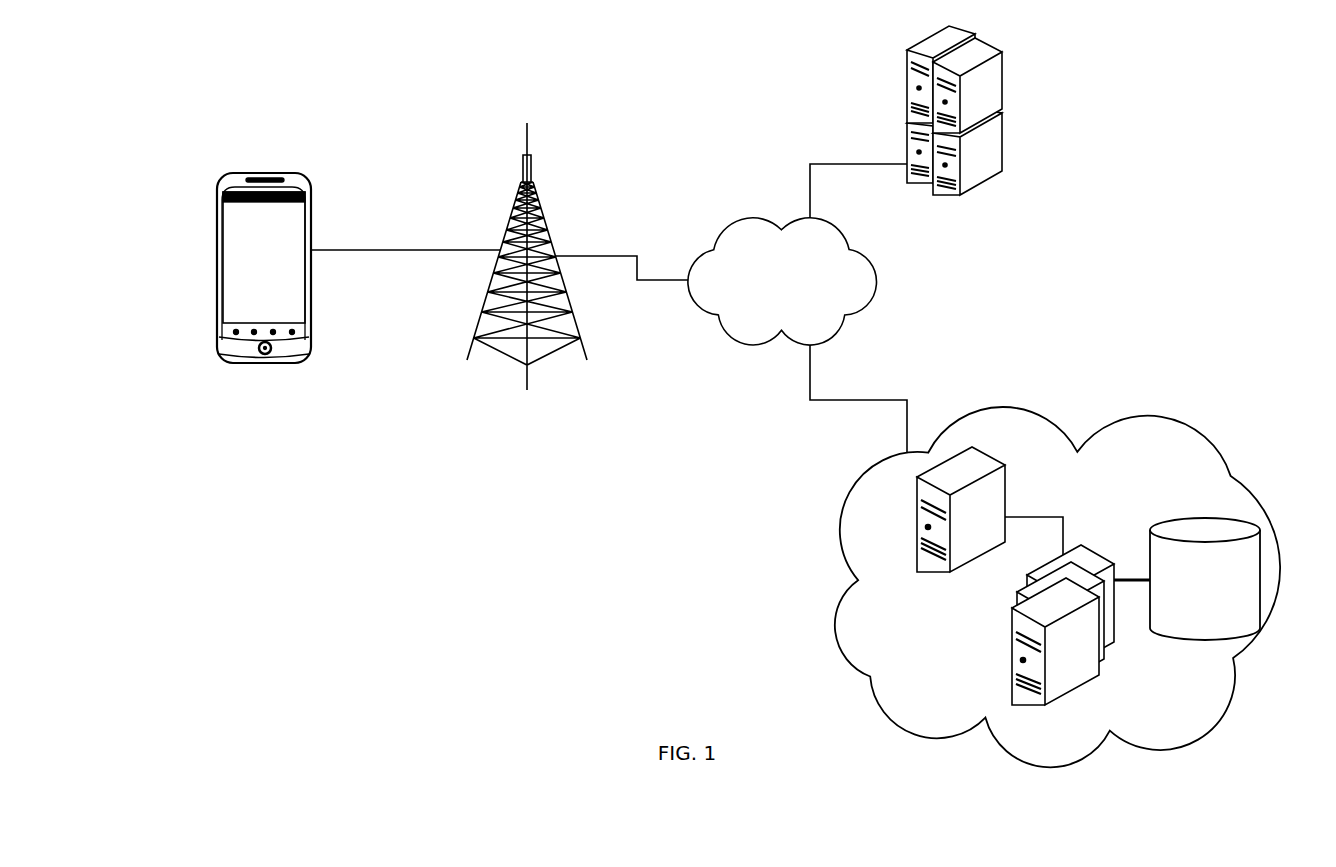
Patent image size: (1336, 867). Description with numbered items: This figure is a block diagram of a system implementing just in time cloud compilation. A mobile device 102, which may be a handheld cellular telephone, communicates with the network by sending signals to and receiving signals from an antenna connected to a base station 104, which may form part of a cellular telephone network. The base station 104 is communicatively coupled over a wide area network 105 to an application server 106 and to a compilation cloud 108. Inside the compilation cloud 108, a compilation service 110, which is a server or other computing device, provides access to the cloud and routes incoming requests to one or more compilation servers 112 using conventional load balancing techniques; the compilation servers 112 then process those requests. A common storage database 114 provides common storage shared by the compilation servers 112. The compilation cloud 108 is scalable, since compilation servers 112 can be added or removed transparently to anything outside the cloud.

The mobile device 102 is at (300, 178).
The base station 104 is at (535, 188).
The wide area network 105 is at (801, 294).
The application server 106 is at (985, 48).
The compilation cloud 108 is at (1050, 420).
The compilation service 110 is at (1003, 462).
The compilation servers 112 is at (1078, 548).
The common storage database 114 is at (1170, 522).